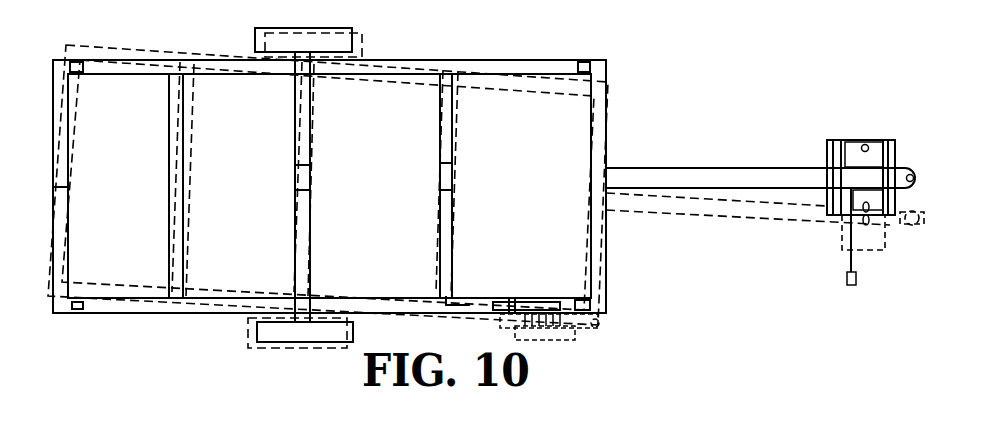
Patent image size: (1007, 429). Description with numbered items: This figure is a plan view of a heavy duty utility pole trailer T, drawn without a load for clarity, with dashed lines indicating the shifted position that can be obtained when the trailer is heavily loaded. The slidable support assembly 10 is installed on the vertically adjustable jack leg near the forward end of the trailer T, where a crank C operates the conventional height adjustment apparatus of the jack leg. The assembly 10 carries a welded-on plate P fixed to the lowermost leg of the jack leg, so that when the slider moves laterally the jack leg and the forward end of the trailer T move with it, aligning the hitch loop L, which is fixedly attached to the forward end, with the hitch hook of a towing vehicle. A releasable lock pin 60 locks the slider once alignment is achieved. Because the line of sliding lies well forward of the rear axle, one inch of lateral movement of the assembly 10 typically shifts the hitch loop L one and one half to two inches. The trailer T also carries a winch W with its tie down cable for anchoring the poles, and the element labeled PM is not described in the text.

The slidable support assembly 10 is at (813, 157).
The trailer T is at (634, 100).
The plate P is at (857, 143).
The hitch loop L is at (914, 166).
The crank C is at (848, 265).
The releasable lock pin 60 is at (868, 224).
The pivot mount PM is at (504, 300).
The winch W is at (570, 335).